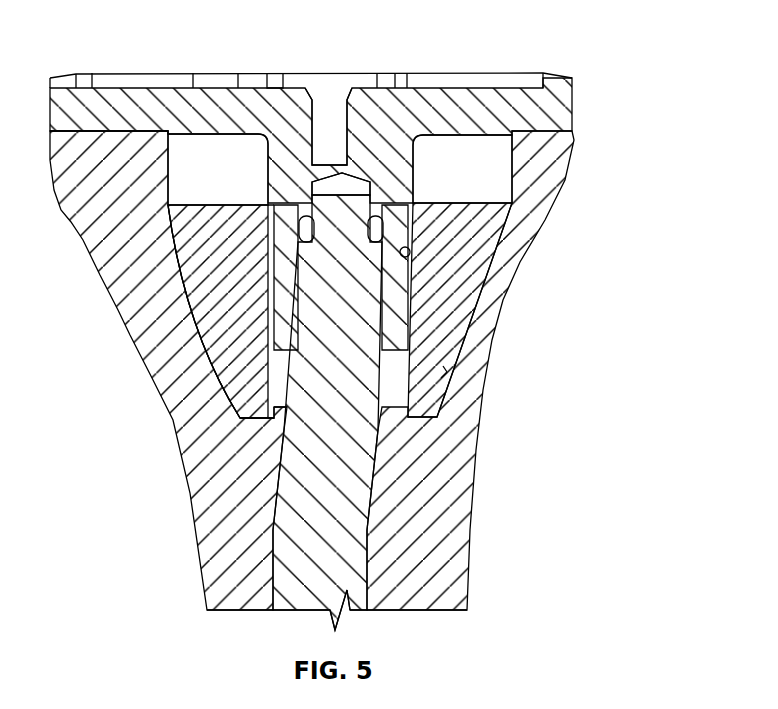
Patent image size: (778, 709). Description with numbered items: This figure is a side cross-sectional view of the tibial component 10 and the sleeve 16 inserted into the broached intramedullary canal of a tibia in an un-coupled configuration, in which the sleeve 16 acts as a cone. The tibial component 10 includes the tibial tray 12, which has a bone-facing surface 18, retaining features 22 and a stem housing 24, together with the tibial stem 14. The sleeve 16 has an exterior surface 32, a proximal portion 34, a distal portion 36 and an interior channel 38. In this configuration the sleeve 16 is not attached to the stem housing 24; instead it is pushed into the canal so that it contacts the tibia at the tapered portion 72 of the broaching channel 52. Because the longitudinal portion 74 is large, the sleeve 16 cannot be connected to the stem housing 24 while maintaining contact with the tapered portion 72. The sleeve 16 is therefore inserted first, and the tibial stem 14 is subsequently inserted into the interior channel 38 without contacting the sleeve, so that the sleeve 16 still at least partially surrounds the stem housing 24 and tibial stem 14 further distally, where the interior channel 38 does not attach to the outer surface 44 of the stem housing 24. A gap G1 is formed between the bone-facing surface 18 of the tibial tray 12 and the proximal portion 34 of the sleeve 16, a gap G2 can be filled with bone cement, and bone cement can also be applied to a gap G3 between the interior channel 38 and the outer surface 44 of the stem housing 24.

The tibial component 10 is at (601, 54).
The tibial tray 12 is at (483, 97).
The tibial stem 14 is at (362, 497).
The sleeve 16 is at (480, 222).
The bone-facing surface 18 is at (83, 133).
The retaining features 22 is at (390, 72).
The stem housing 24 is at (250, 375).
The exterior surface 32 is at (497, 262).
The proximal portion 34 is at (193, 205).
The distal portion 36 is at (423, 420).
The interior channel 38 is at (410, 252).
The outer surface 44 is at (270, 317).
The broaching channel 52 is at (447, 372).
The tapered portion 72 is at (183, 240).
The longitudinal portion 74 is at (168, 140).
The gap G1 is at (487, 165).
The gap G2 is at (283, 420).
The gap G3 is at (270, 270).